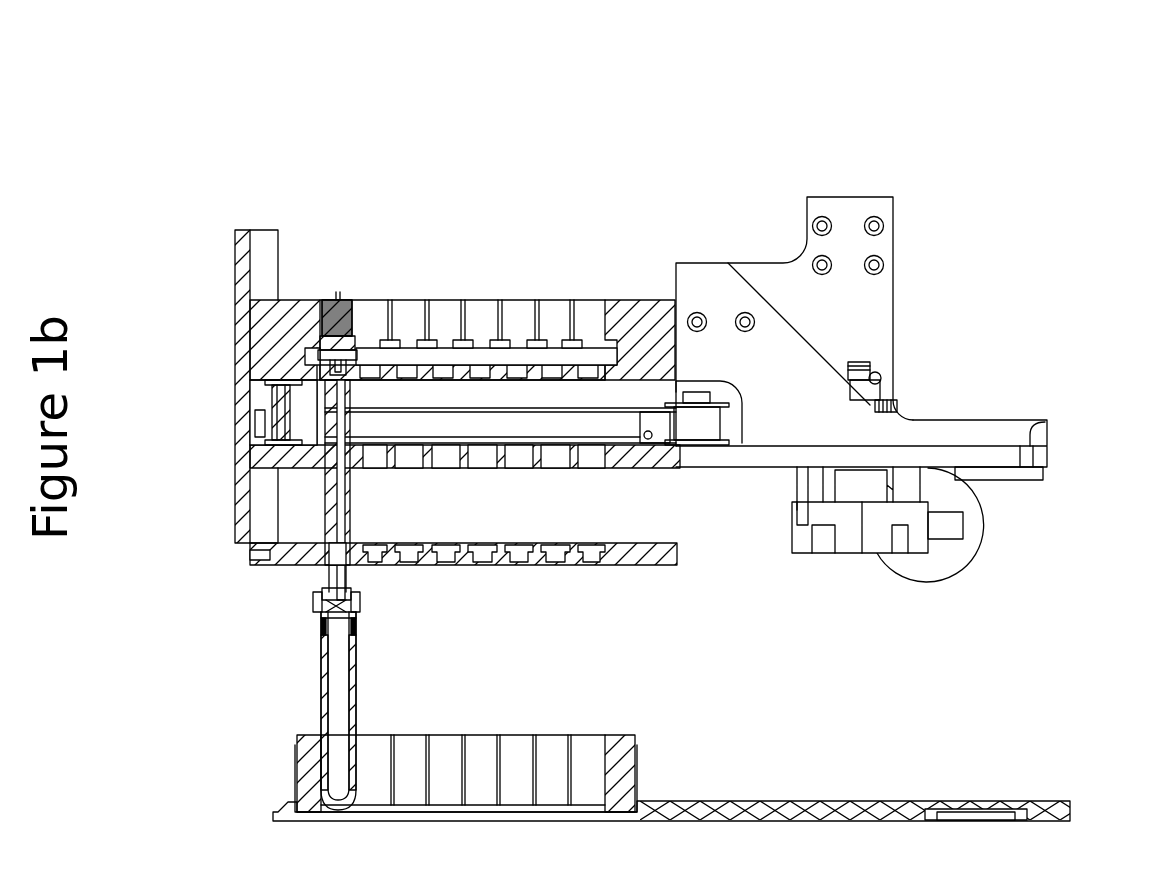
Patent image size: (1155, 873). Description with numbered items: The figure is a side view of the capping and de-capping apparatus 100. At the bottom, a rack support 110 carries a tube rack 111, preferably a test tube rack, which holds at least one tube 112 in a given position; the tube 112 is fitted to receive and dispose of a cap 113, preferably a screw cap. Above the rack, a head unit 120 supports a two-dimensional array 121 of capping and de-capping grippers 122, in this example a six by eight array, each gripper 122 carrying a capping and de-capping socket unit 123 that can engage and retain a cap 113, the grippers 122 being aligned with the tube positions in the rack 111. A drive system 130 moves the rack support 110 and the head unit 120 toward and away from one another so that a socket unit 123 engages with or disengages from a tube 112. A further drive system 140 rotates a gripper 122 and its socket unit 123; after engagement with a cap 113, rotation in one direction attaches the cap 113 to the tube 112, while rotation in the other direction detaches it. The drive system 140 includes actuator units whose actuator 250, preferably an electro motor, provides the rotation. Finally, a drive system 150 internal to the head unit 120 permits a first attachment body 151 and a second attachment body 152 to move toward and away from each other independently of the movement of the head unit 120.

The capping and de-capping apparatus 100 is at (490, 185).
The rack support 110 is at (735, 800).
The tube rack 111 is at (630, 743).
The tube 112 is at (360, 683).
The cap 113 is at (360, 618).
The head unit 120 is at (895, 328).
The two-dimensional array 121 is at (383, 298).
The capping and de-capping gripper 122 is at (290, 515).
The capping and de-capping socket unit 123 is at (313, 592).
The drive system 130 is at (1030, 480).
The drive system 140 is at (333, 337).
The drive system 150 is at (882, 520).
The first attachment body 151 is at (263, 364).
The second attachment body 152 is at (317, 555).
The actuator 250 is at (331, 298).